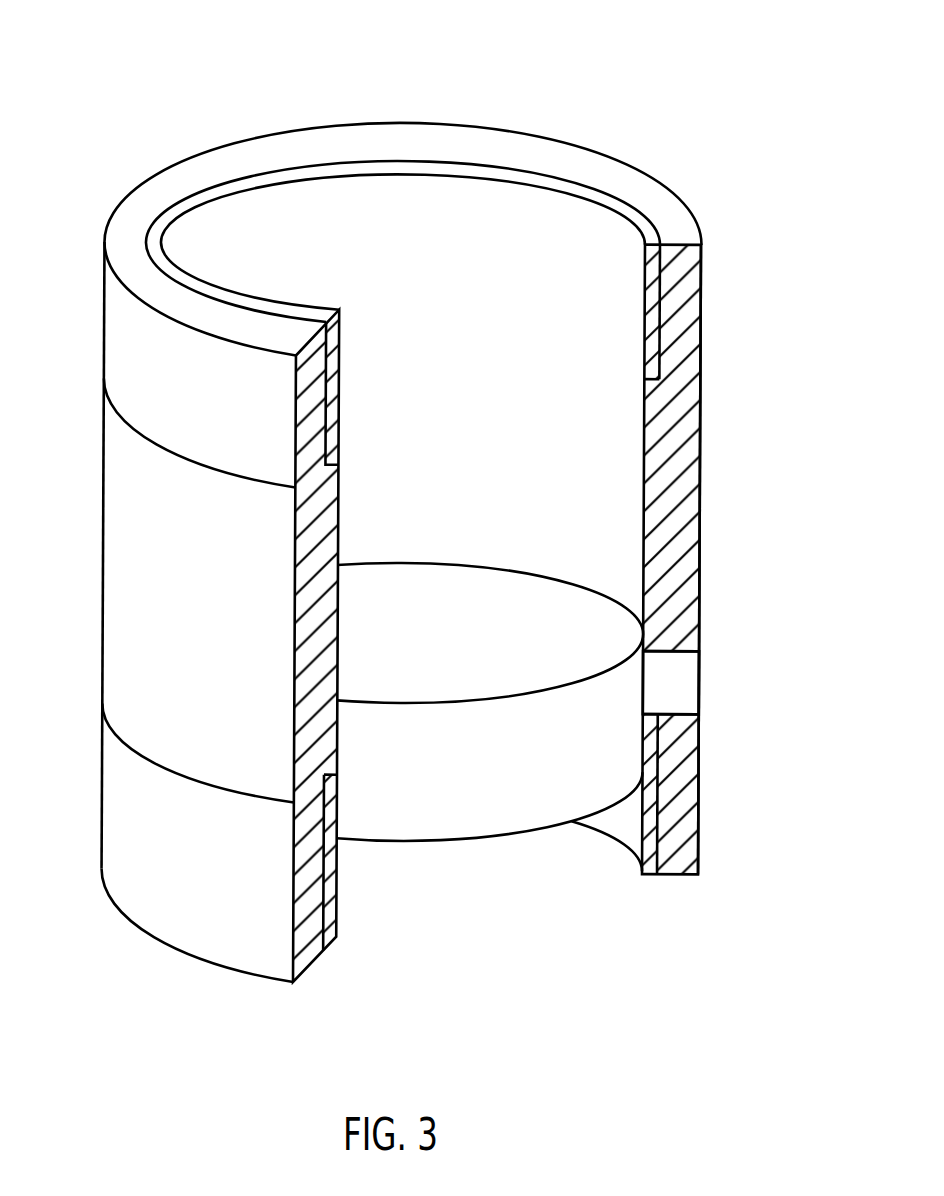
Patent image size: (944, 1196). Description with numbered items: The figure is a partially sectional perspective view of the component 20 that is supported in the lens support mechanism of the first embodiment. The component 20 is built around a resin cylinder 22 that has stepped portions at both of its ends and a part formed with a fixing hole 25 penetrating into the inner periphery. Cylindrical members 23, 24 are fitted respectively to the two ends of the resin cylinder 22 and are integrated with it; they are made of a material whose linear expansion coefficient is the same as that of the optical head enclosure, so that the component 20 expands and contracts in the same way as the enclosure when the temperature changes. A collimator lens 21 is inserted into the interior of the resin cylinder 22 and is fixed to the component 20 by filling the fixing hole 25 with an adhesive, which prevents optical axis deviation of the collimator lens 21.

The component 20 is at (458, 505).
The collimator lens 21 is at (522, 813).
The resin cylinder 22 is at (701, 511).
The cylindrical member 23 is at (701, 311).
The cylindrical member 24 is at (701, 812).
The fixing hole 25 is at (701, 676).